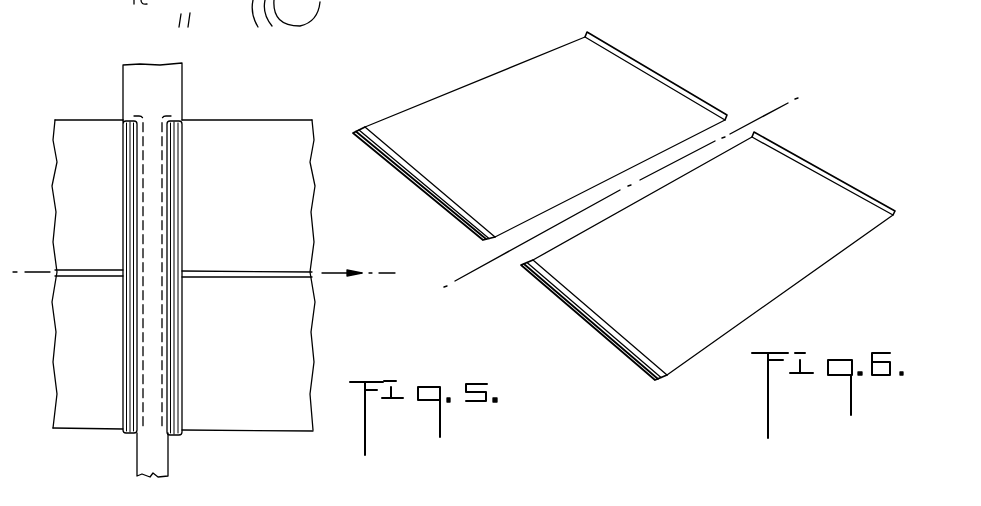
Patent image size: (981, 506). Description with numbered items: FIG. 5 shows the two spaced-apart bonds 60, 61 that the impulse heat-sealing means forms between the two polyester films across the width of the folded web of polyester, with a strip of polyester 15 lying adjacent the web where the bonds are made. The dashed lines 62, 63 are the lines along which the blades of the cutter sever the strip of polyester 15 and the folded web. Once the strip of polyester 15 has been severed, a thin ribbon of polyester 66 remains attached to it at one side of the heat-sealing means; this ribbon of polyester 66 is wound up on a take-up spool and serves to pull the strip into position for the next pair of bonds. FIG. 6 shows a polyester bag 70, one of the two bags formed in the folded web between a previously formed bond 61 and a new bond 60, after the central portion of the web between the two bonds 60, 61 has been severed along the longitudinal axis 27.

In FIG. 5, the strip of polyester 15 is at (176, 96).
In FIG. 5, the bond 60 is at (125, 174).
In FIG. 6, the bond 60 is at (667, 87).
In FIG. 5, the bond 61 is at (175, 180).
In FIG. 6, the bond 61 is at (447, 210).
In FIG. 5, the dashed line 62 is at (142, 214).
In FIG. 5, the dashed line 63 is at (185, 225).
In FIG. 5, the ribbon of polyester 66 is at (157, 448).
In FIG. 6, the polyester bag 70 is at (450, 92).
In FIG. 6, the longitudinal axis 27 is at (473, 268).